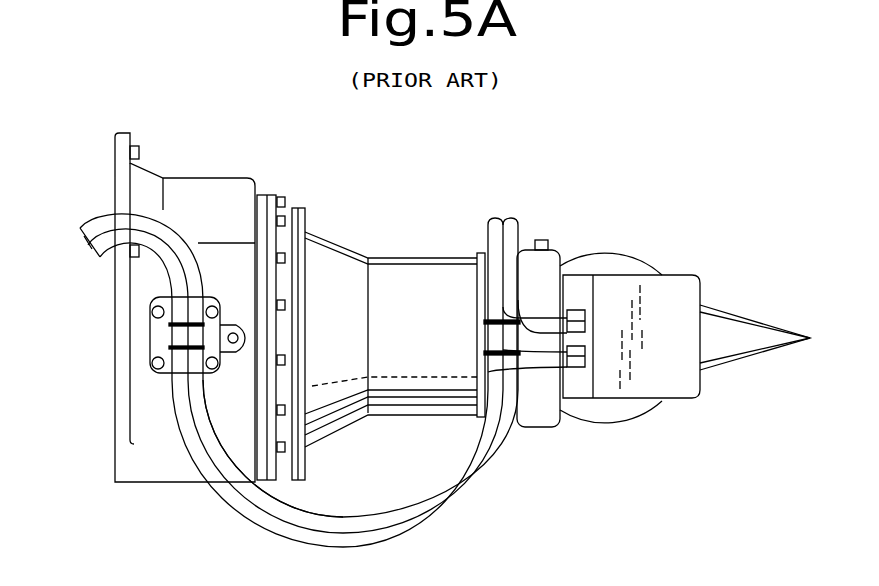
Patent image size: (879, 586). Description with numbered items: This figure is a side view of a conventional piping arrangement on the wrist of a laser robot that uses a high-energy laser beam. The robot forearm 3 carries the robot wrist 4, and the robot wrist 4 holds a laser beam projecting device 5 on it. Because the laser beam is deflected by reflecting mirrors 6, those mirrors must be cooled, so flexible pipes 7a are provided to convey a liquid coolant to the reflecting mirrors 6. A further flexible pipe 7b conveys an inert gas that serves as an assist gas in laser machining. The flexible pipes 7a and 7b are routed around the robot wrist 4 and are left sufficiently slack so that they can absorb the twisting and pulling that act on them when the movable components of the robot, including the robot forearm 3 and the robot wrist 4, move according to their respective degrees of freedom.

The robot forearm 3 is at (163, 472).
The robot wrist 4 is at (430, 262).
The laser beam projecting device 5 is at (745, 325).
The reflecting mirrors 6 is at (678, 382).
The flexible pipes 7a is at (513, 228).
The flexible pipe 7b is at (385, 513).